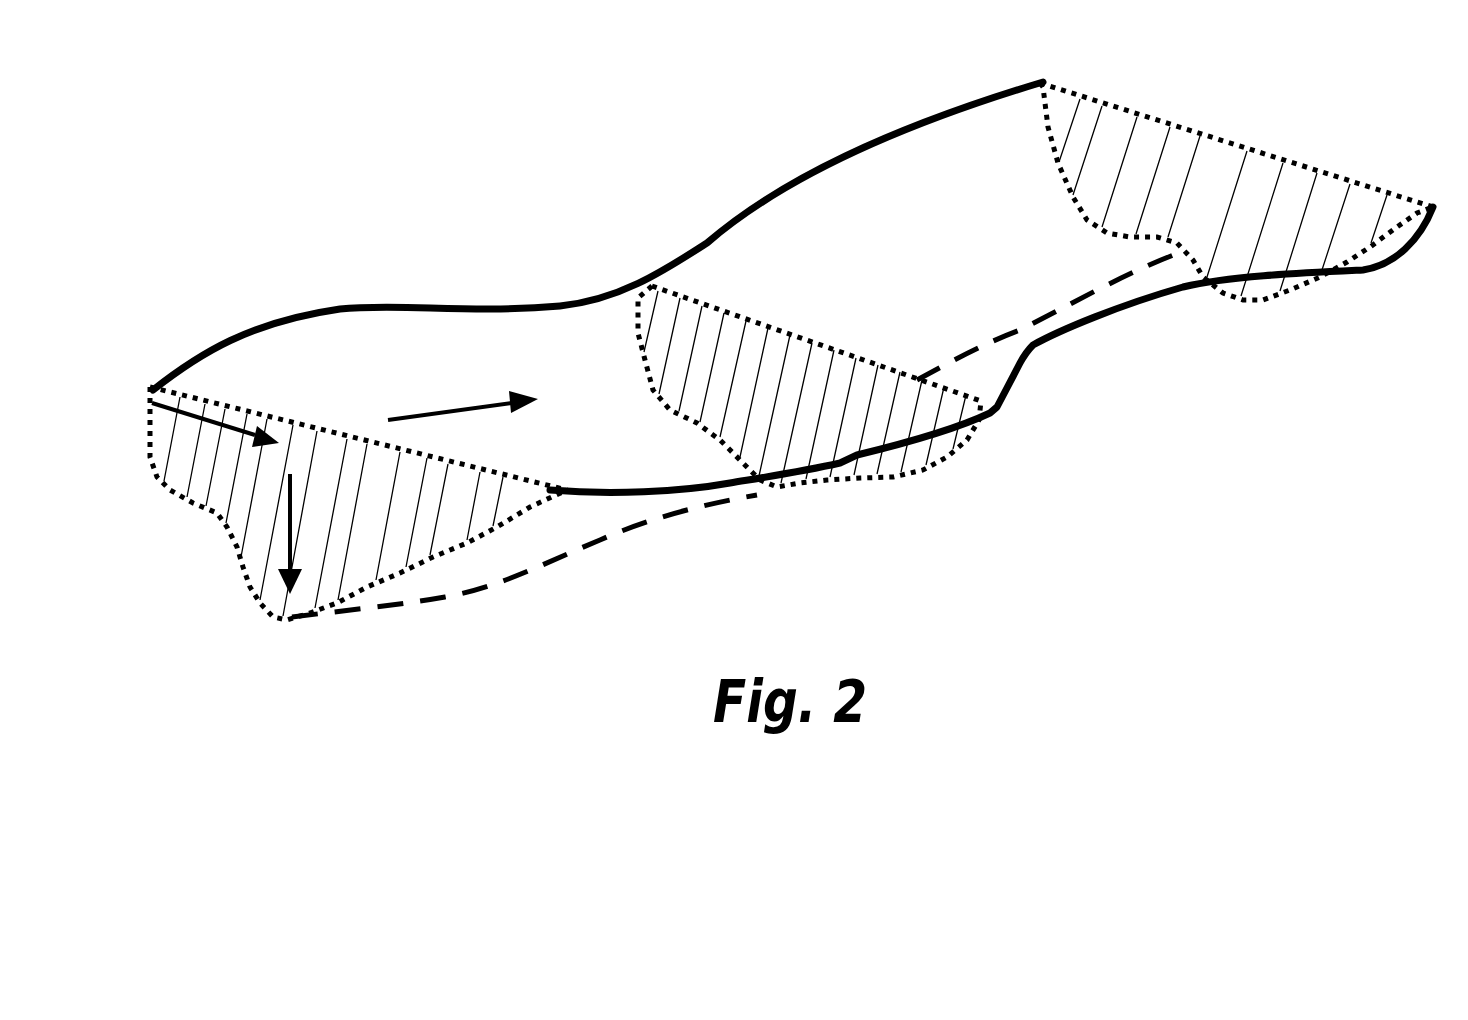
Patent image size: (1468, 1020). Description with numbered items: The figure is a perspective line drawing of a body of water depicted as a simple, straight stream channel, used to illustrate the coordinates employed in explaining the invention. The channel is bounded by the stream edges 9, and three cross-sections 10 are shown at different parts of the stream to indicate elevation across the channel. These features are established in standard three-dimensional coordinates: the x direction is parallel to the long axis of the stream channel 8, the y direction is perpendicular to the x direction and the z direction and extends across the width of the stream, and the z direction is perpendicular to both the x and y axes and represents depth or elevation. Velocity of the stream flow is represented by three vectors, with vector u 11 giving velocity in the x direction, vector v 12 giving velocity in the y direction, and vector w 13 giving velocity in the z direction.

The long axis of the stream channel 8 is at (448, 610).
The stream edges 9 is at (1027, 350).
The cross-sections 10 is at (1187, 130).
The vector u 11 is at (453, 404).
The vector v 12 is at (183, 410).
The vector w 13 is at (293, 560).